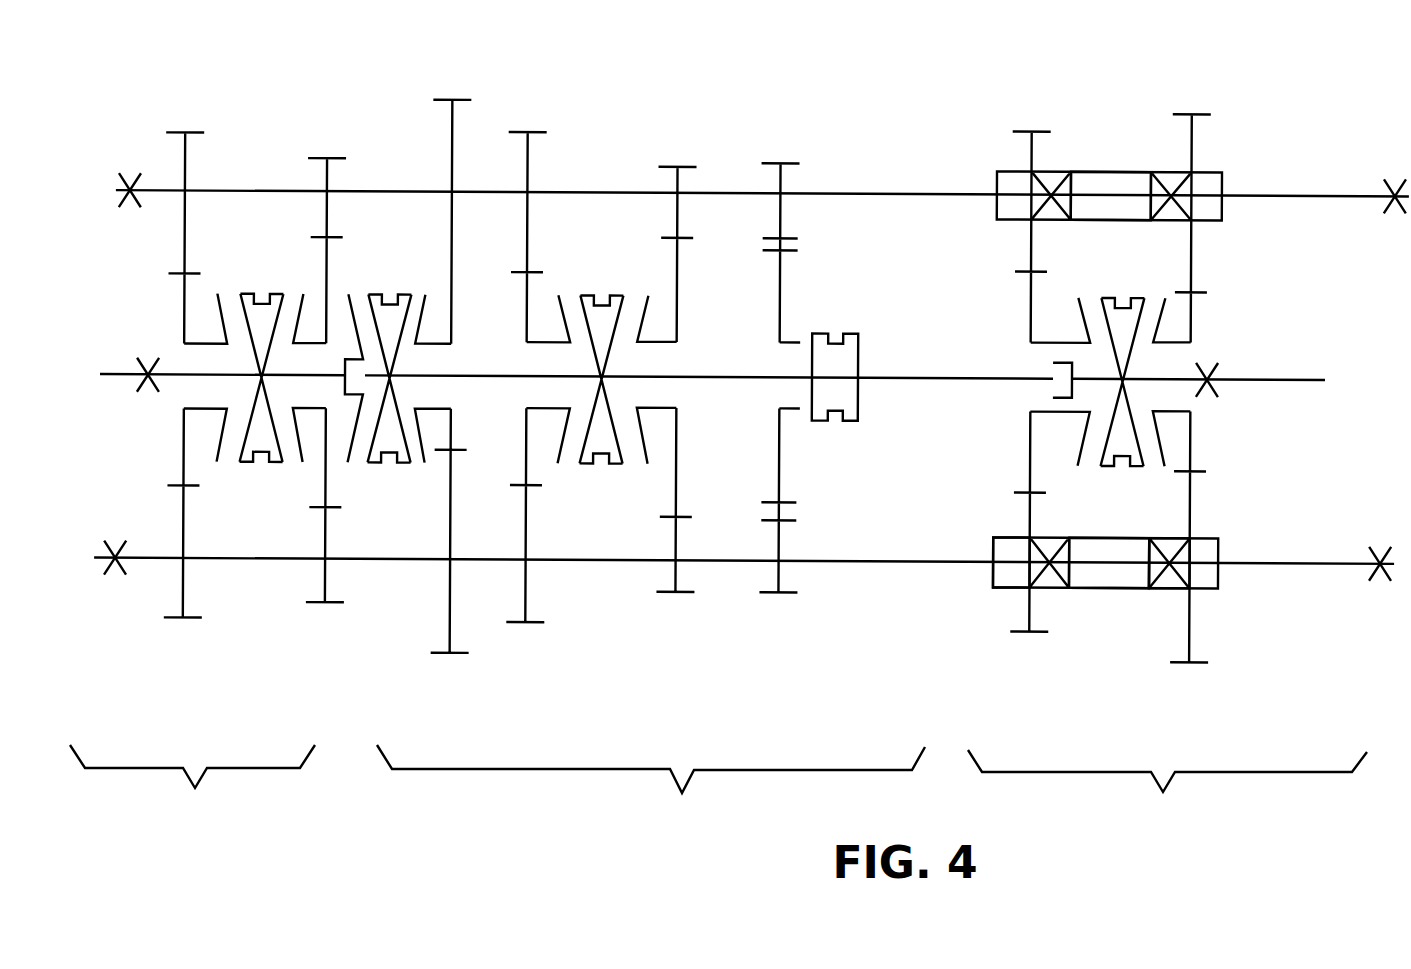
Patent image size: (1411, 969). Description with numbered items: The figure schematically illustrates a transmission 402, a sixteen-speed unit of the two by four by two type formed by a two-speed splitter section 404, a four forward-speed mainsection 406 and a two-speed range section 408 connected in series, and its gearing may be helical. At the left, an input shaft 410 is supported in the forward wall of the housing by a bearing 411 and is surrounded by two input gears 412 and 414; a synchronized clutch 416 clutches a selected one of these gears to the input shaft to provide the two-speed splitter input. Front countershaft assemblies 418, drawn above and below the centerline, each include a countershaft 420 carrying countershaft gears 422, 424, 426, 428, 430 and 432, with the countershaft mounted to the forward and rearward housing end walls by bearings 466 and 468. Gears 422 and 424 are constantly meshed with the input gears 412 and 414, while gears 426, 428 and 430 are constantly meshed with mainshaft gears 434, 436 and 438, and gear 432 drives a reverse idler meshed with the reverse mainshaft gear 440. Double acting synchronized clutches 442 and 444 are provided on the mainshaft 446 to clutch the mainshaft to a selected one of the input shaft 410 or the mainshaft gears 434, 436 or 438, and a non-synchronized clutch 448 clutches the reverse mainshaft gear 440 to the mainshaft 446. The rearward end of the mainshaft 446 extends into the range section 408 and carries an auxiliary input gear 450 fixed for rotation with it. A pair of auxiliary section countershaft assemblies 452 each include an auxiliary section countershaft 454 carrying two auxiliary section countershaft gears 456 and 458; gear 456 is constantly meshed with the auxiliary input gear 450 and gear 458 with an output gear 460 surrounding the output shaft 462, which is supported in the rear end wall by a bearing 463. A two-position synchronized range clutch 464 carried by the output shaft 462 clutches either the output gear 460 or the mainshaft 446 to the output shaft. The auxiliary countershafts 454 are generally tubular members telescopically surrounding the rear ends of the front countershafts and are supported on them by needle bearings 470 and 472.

The transmission 402 is at (855, 135).
The two-speed splitter section 404 is at (192, 787).
The four forward-speed mainsection 406 is at (651, 788).
The two-speed range section 408 is at (1167, 792).
The input shaft 410 is at (133, 380).
The bearing 411 is at (138, 370).
The input gear 412 is at (180, 307).
The input gear 414 is at (328, 293).
The synchronized clutch 416 is at (257, 466).
The front countershaft assembly 418 is at (344, 116).
The countershaft 420 is at (555, 190).
The countershaft gear 422 is at (192, 160).
The countershaft gear 424 is at (323, 178).
The countershaft gear 426 is at (450, 160).
The countershaft gear 428 is at (525, 168).
The countershaft gear 430 is at (682, 182).
The countershaft gear 432 is at (784, 185).
The mainshaft gear 434 is at (448, 322).
The mainshaft gear 436 is at (525, 305).
The mainshaft gear 438 is at (673, 287).
The reverse mainshaft gear 440 is at (775, 302).
The double acting synchronized clutch 442 is at (397, 465).
The double acting synchronized clutch 444 is at (615, 466).
The mainshaft 446 is at (722, 382).
The non-synchronized clutch 448 is at (845, 358).
The auxiliary input gear 450 is at (1027, 292).
The auxiliary section countershaft assembly 452 is at (1053, 150).
The auxiliary section countershaft 454 is at (1099, 171).
The auxiliary section countershaft gear 456 is at (1025, 152).
The auxiliary section countershaft gear 458 is at (1197, 152).
The output gear 460 is at (1192, 328).
The output shaft 462 is at (1250, 383).
The bearing 463 is at (1213, 370).
The two-position synchronized range clutch 464 is at (1115, 297).
The bearing 466 is at (126, 185).
The bearing 468 is at (1388, 183).
The needle bearing 470 is at (1000, 595).
The needle bearing 472 is at (1172, 538).